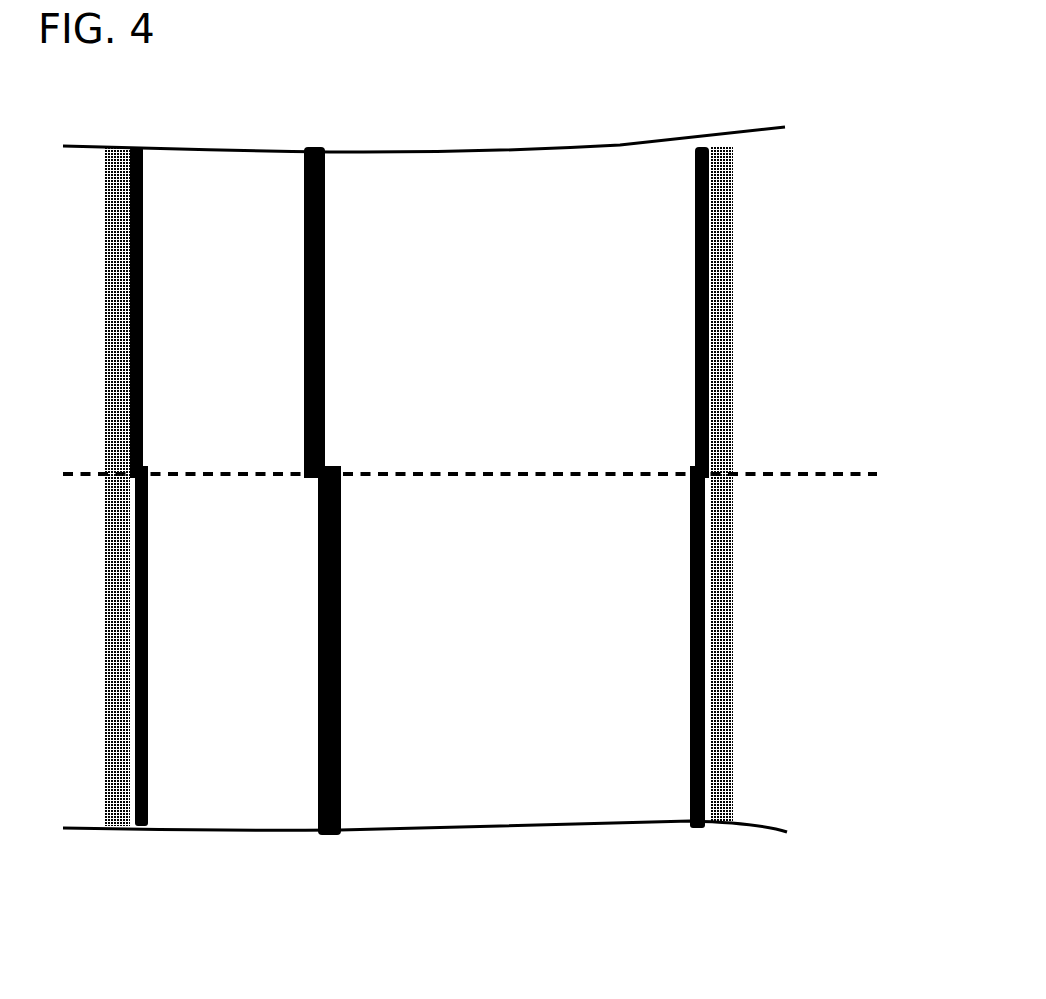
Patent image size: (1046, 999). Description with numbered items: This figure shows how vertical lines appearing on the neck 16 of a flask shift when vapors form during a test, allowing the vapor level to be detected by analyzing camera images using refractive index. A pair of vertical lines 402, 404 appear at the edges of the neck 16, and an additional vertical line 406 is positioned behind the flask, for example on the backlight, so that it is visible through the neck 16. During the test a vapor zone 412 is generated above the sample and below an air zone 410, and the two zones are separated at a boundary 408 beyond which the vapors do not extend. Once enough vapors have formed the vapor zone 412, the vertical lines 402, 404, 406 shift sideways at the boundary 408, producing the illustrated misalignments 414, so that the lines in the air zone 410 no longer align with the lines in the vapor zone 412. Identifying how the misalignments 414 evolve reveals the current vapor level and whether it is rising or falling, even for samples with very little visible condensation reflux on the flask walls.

The neck 16 is at (743, 629).
The vertical line 402 is at (165, 811).
The vertical line 404 is at (677, 792).
The additional vertical line 406 is at (358, 812).
The boundary 408 is at (845, 496).
The air zone 410 is at (497, 378).
The vapor zone 412 is at (505, 572).
The misalignments 414 is at (680, 441).